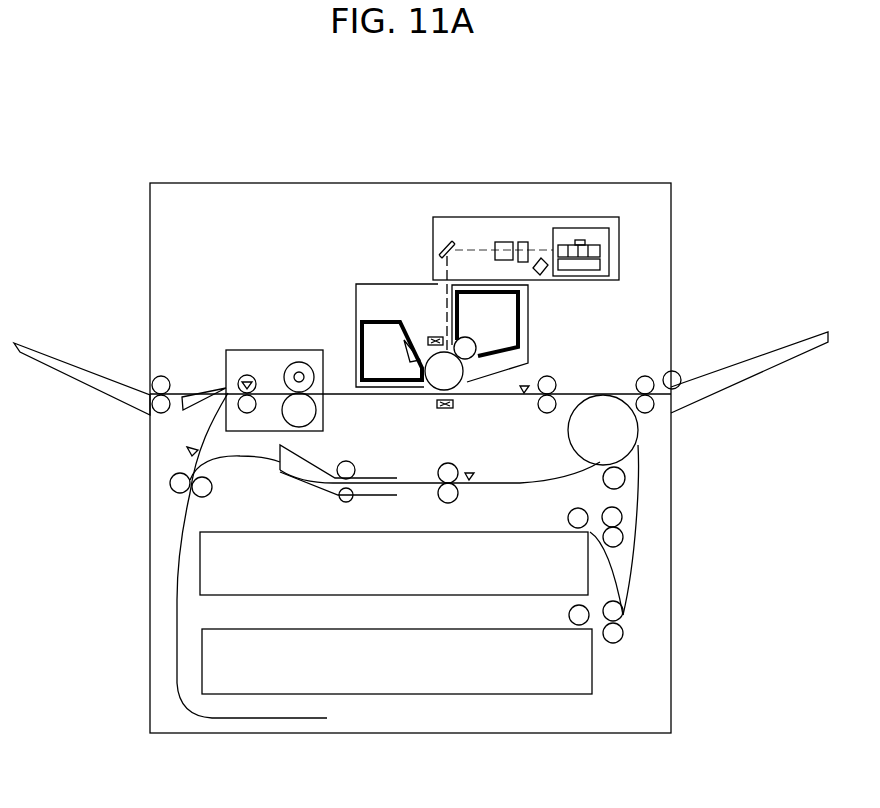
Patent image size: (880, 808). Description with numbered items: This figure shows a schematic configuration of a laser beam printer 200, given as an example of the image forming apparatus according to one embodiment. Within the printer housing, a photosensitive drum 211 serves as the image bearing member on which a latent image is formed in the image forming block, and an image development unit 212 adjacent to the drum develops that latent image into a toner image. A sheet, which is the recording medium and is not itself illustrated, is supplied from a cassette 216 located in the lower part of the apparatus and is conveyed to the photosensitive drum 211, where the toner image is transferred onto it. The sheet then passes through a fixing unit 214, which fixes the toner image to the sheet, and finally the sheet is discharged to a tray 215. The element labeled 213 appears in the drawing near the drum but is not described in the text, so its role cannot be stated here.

The laser beam printer 200 is at (352, 197).
The photosensitive drum 211 is at (385, 283).
The image development unit 212 is at (466, 340).
The photosensitive drum 213 is at (456, 386).
The fixing unit 214 is at (266, 348).
The tray 215 is at (60, 360).
The cassette 216 is at (567, 567).